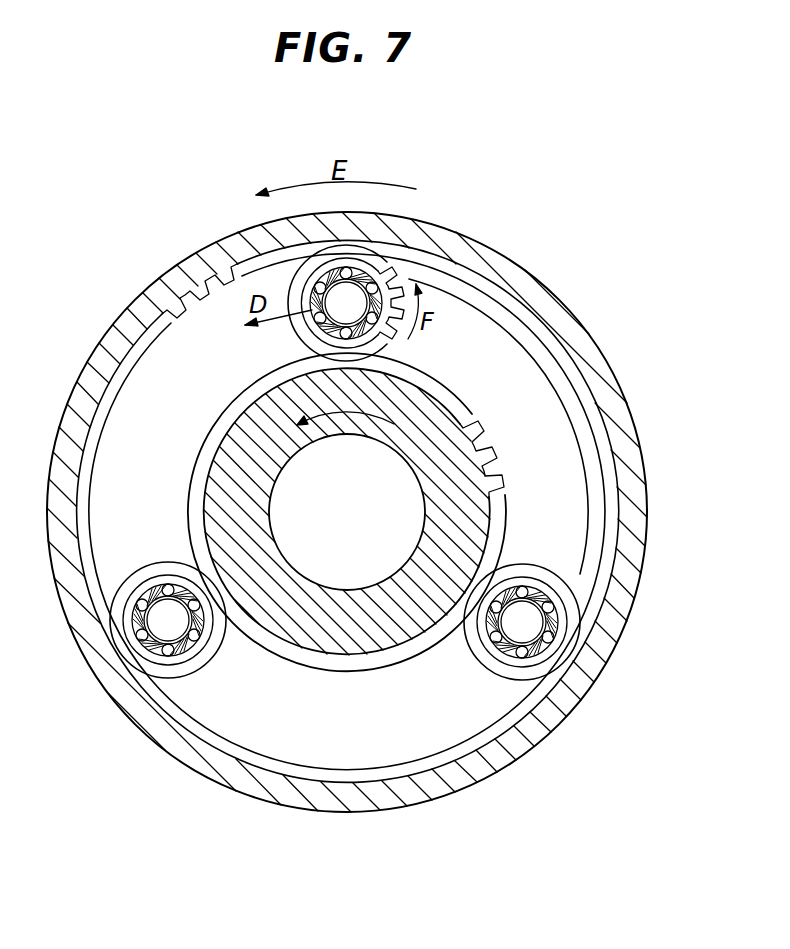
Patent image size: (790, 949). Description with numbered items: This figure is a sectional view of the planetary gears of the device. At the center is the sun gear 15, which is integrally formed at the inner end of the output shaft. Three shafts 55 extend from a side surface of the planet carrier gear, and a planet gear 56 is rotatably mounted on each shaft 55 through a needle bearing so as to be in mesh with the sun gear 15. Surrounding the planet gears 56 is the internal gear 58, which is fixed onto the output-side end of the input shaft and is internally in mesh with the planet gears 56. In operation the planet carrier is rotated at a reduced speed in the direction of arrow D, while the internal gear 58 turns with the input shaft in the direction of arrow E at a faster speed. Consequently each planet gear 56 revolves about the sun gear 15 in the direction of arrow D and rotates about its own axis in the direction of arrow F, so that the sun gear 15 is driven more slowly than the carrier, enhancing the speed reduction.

The sun gear 15 is at (490, 452).
The shaft 55 is at (528, 624).
The planet gear 56 is at (385, 272).
The internal gear 58 is at (588, 350).